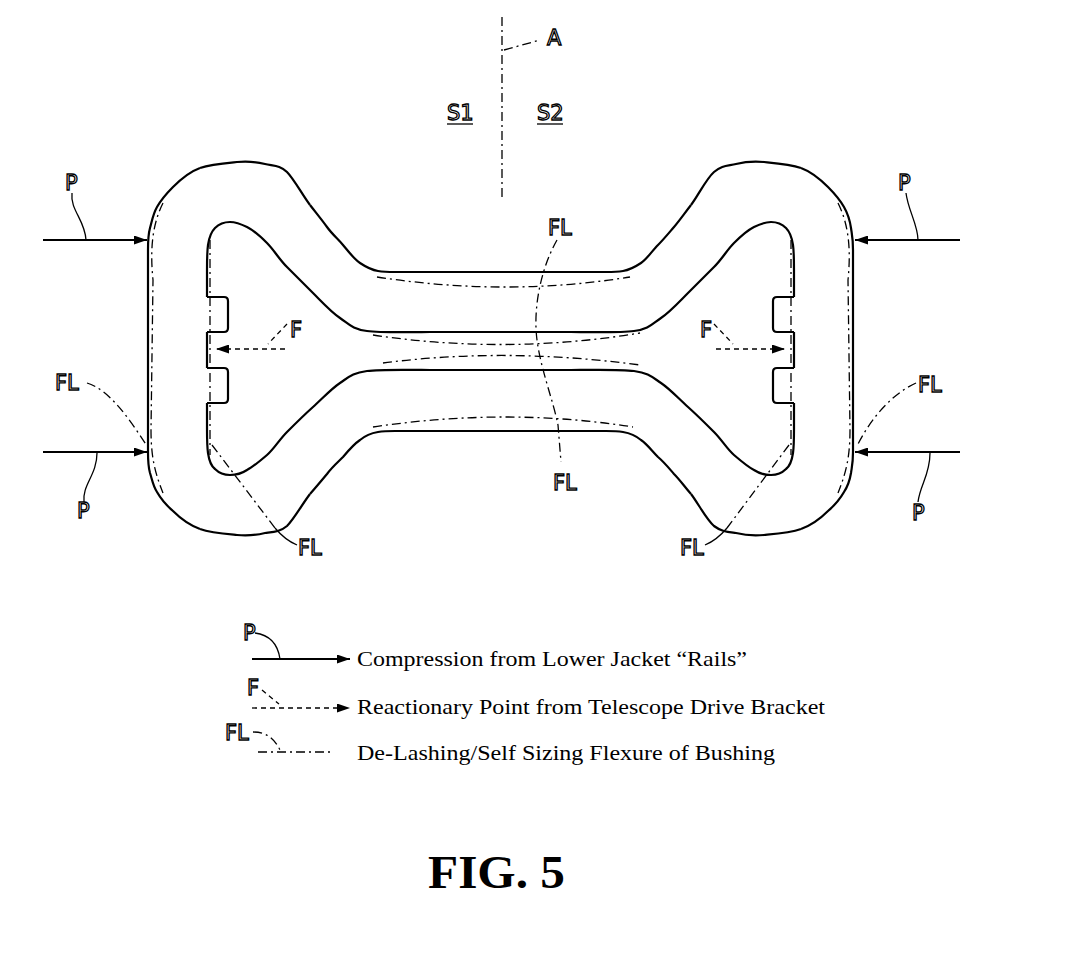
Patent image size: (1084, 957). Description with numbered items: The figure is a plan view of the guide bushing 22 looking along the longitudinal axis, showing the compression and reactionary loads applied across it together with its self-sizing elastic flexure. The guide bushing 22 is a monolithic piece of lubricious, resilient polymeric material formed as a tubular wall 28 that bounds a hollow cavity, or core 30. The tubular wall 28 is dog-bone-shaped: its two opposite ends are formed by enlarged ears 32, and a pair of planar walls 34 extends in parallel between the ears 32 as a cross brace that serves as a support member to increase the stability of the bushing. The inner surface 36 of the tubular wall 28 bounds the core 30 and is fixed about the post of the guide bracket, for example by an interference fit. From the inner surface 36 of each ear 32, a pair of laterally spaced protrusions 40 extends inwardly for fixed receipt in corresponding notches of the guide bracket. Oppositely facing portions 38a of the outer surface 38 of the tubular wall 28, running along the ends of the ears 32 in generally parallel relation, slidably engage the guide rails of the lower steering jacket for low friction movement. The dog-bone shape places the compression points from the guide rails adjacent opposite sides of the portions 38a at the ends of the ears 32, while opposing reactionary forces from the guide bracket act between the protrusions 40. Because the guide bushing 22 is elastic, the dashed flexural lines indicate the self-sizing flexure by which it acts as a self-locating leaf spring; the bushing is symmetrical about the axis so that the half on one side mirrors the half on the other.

The guide bushing 22 is at (791, 87).
The tubular wall 28 is at (304, 215).
The core 30 is at (280, 414).
The enlarged ears 32 is at (191, 168).
The planar walls 34 is at (487, 270).
The inner surface 36 is at (263, 444).
The outer surface 38 is at (290, 176).
The oppositely facing portions 38a is at (146, 340).
The protrusions 40 is at (231, 314).